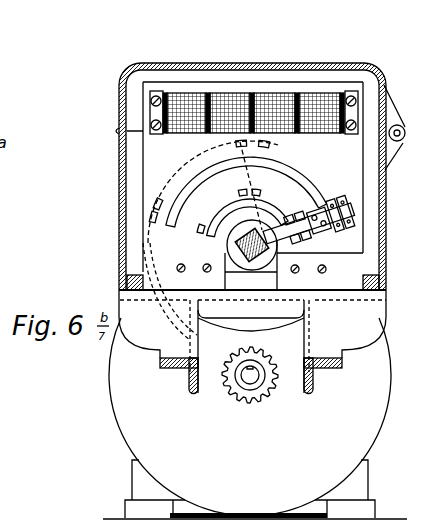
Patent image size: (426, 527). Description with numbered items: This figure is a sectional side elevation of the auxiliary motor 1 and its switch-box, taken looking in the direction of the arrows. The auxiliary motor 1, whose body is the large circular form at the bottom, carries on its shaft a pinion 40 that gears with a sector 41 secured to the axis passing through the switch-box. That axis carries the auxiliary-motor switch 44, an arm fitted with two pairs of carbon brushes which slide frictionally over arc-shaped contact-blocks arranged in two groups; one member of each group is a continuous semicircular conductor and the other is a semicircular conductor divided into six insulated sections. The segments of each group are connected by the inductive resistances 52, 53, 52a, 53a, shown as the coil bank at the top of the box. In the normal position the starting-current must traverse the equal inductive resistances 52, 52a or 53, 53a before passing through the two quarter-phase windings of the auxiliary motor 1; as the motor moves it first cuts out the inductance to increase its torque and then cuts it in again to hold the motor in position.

The auxiliary motor 1 is at (250, 417).
The pinion 40 is at (266, 393).
The sector 41 is at (213, 343).
The auxiliary-motor switch 44 is at (317, 218).
The inductive resistance 52 is at (178, 92).
The inductive resistance 53 is at (226, 92).
The inductive resistance 52a is at (271, 92).
The inductive resistance 53a is at (323, 93).